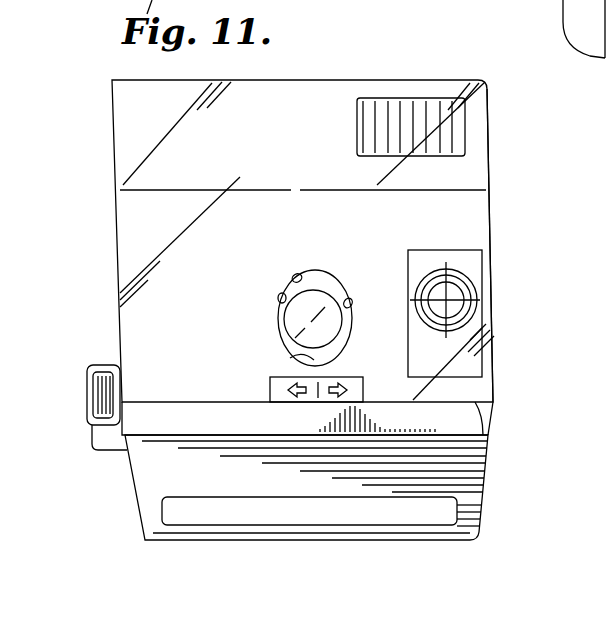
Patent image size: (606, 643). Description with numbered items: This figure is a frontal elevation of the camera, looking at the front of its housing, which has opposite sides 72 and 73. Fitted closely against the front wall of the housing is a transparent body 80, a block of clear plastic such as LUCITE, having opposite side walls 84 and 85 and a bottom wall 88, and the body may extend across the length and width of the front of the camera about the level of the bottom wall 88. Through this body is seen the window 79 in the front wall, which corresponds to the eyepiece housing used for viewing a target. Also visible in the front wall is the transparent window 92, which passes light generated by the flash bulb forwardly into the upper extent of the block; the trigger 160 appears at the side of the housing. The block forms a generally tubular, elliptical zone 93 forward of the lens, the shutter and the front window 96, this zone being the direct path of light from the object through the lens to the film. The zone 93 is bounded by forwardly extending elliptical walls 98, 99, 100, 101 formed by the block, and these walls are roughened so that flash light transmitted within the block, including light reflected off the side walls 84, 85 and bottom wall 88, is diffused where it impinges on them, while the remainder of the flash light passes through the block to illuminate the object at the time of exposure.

The side of housing 72 is at (115, 215).
The side of housing 73 is at (490, 130).
The window 79 is at (453, 292).
The transparent body 80 is at (480, 214).
The side wall of body 84 is at (118, 305).
The side wall of body 85 is at (490, 345).
The bottom wall of body 88 is at (489, 440).
The transparent window 92 is at (403, 106).
The zone 93 is at (278, 324).
The front window 96 is at (318, 300).
The elliptical wall 98 is at (278, 292).
The elliptical wall 99 is at (350, 298).
The elliptical wall 100 is at (293, 274).
The elliptical wall 101 is at (290, 352).
The trigger 160 is at (87, 380).